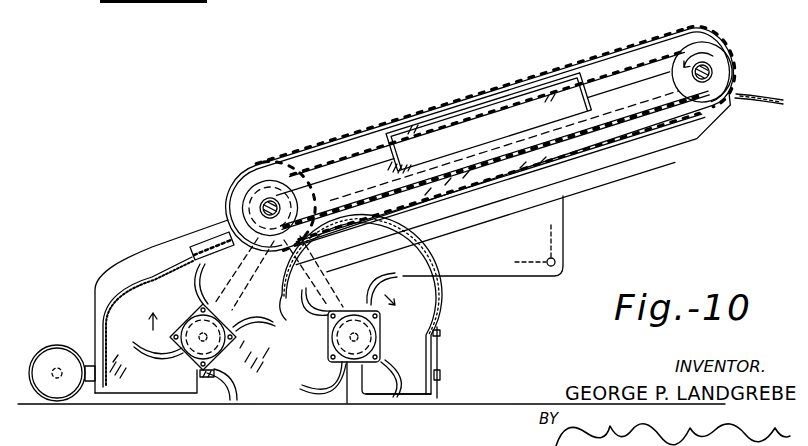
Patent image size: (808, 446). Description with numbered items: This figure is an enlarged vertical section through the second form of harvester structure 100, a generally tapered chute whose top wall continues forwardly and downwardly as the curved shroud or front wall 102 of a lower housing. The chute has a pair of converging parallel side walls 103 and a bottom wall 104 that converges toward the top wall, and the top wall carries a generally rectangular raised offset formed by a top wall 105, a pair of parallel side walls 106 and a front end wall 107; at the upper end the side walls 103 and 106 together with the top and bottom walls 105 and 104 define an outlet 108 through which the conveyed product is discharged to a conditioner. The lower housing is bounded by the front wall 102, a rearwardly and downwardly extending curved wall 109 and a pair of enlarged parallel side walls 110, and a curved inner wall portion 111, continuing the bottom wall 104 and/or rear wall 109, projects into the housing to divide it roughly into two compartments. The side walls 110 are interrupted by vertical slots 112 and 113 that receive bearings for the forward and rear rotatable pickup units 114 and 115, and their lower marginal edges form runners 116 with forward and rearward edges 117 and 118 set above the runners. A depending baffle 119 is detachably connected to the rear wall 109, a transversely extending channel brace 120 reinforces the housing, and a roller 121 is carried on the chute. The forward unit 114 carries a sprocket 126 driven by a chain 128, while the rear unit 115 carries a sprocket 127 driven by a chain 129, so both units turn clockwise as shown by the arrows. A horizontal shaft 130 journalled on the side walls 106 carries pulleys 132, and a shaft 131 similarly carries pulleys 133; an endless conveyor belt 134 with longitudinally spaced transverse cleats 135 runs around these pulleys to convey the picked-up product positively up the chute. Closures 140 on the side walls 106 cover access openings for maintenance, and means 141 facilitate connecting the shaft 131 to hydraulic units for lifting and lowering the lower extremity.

The harvester structure 100 is at (439, 100).
The front wall 102 is at (118, 310).
The side walls 103 is at (493, 190).
The bottom wall 104 is at (655, 137).
The top wall 105 is at (362, 131).
The side walls 106 is at (363, 168).
The front end wall 107 is at (220, 222).
The outlet 108 is at (740, 97).
The curved wall 109 is at (430, 312).
The side walls 110 is at (272, 383).
The curved inner wall portion 111 is at (298, 314).
The vertical slot 112 is at (213, 405).
The vertical slot 113 is at (352, 387).
The forward rotatable pickup unit 114 is at (178, 353).
The rear rotatable pickup unit 115 is at (376, 347).
The runners 116 is at (303, 407).
The lower marginal edge 117 is at (127, 397).
The lower marginal edge 118 is at (420, 397).
The baffle 119 is at (439, 361).
The channel brace 120 is at (190, 240).
The roller 121 is at (63, 340).
The sprocket 126 is at (190, 370).
The sprocket 127 is at (380, 333).
The chain 128 is at (200, 283).
The chain 129 is at (333, 272).
The horizontal shaft 130 is at (279, 207).
The shaft 131 is at (711, 72).
The pulleys 132 is at (296, 188).
The pulleys 133 is at (715, 55).
The endless conveyor belt 134 is at (605, 60).
The cleats 135 is at (632, 62).
The closures 140 is at (477, 133).
The means 141 is at (556, 262).